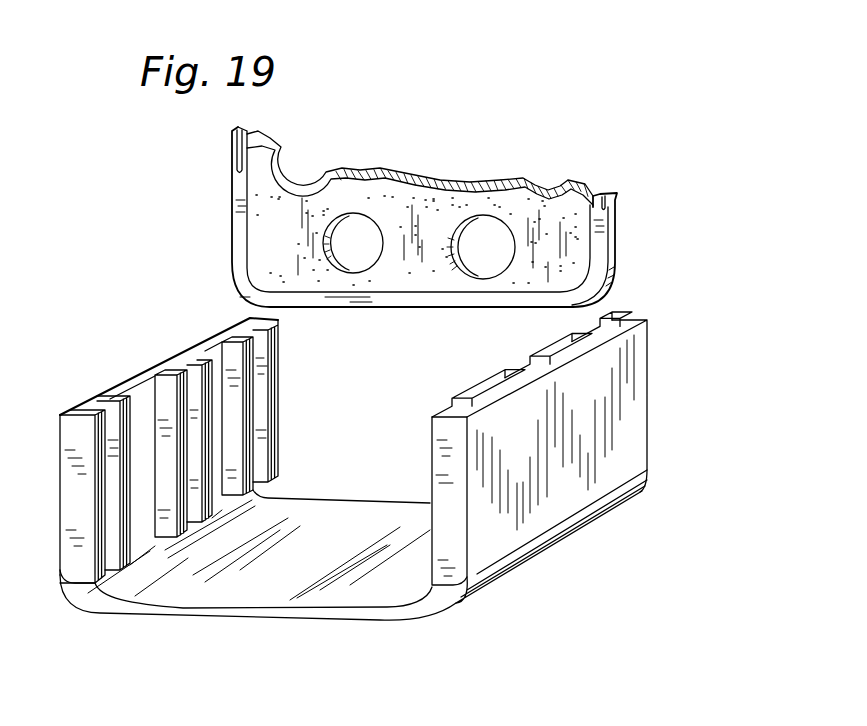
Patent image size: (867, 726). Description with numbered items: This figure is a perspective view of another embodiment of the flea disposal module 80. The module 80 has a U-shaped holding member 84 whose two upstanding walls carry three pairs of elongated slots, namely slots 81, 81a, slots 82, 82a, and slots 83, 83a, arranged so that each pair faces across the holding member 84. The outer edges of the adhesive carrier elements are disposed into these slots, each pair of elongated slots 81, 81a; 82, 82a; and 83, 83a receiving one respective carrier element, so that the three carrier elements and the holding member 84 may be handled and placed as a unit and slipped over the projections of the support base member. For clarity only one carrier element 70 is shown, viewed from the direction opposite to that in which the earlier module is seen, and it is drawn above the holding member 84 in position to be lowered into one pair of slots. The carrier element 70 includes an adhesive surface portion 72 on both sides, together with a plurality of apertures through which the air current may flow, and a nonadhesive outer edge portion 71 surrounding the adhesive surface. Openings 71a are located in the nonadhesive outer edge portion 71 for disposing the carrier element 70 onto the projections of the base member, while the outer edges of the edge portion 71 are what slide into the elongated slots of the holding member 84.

The carrier element 70 is at (426, 202).
The nonadhesive outer edge portion 71 is at (238, 257).
The openings 71a is at (240, 153).
The adhesive surface portion 72 is at (294, 235).
The flea disposal module 80 is at (412, 495).
The elongated slot 81 is at (262, 380).
The elongated slot 82 is at (193, 453).
The elongated slot 83 is at (120, 553).
The elongated slot 81a is at (582, 328).
The elongated slot 82a is at (527, 363).
The elongated slot 83a is at (447, 406).
The U-shaped holding member 84 is at (403, 621).